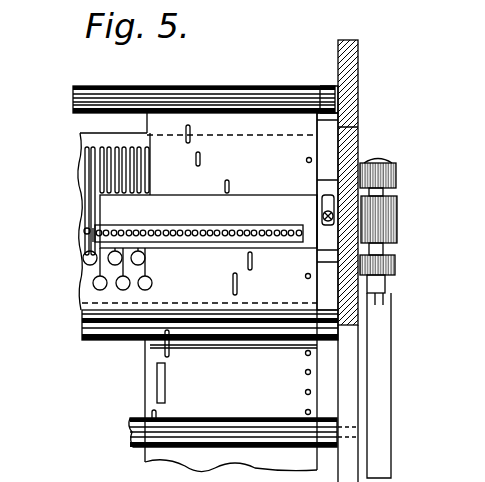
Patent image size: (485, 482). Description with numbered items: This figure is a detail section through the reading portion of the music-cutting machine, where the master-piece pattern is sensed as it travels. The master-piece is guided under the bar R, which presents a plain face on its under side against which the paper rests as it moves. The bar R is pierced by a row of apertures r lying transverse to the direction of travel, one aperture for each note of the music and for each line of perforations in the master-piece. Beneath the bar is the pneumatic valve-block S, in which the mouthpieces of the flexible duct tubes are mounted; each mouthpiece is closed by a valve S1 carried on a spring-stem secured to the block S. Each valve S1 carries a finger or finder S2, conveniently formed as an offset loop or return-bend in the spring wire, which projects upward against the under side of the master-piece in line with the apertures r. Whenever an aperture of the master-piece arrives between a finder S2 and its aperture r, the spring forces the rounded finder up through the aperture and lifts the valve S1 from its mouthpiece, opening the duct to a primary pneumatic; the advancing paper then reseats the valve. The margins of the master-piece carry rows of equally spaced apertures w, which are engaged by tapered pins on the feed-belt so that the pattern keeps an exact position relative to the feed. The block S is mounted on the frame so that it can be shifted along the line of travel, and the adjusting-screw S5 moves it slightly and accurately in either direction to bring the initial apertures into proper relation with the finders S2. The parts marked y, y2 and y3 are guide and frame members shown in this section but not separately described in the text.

The upper guide bar y is at (255, 95).
The guide bar end y2 is at (292, 90).
The lower guide bar y3 is at (148, 433).
The bar R is at (245, 203).
The apertures r is at (188, 230).
The equally-spaced apertures w is at (306, 158).
The pneumatic valve-block S is at (80, 212).
The valve S1 is at (118, 292).
The finder S2 is at (93, 232).
The adjusting-screw S5 is at (392, 278).